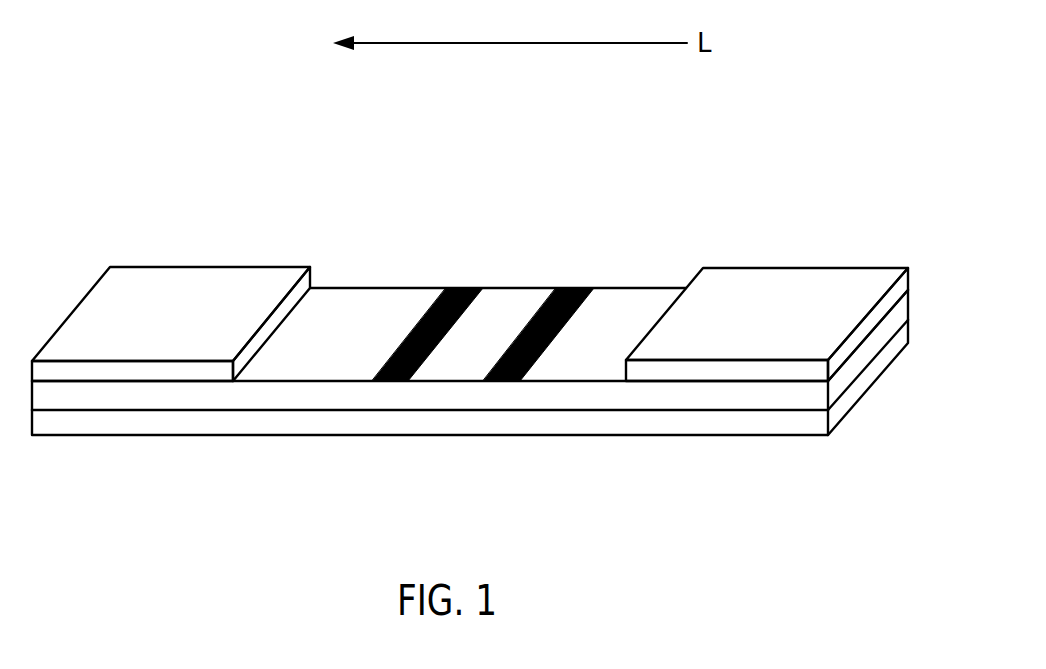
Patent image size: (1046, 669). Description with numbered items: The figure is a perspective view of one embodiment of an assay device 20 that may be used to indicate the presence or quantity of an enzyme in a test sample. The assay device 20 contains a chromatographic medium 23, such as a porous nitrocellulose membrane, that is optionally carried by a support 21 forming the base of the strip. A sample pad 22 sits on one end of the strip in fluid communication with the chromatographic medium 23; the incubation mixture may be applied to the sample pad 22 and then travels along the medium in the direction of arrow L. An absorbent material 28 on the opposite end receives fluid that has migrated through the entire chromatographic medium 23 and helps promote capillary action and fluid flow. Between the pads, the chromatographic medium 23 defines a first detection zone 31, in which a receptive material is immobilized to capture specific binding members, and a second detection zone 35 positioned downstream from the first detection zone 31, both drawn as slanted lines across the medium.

The assay device 20 is at (121, 216).
The support 21 is at (142, 418).
The sample pad 22 is at (783, 283).
The chromatographic medium 23 is at (608, 395).
The absorbent material 28 is at (240, 290).
The first detection zone 31 is at (568, 287).
The second detection zone 35 is at (463, 287).